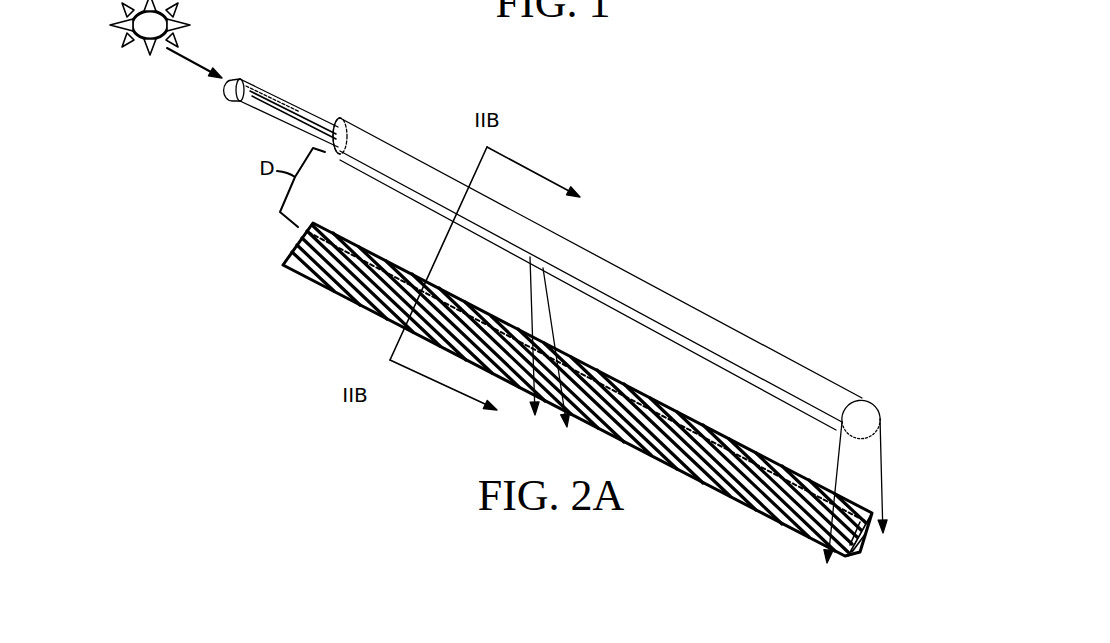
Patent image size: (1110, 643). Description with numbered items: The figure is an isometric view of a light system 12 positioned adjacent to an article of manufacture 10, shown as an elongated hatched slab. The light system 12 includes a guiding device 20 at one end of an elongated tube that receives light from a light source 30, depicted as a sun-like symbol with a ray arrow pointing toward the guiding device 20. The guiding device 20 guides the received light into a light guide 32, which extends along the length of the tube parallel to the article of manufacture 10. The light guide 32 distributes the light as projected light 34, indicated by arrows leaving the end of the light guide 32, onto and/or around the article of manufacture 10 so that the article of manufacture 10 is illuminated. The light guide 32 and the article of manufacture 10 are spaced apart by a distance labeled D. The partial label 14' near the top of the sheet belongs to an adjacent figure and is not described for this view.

In FIG. 2A, the article of manufacture 10 is at (292, 272).
In FIG. 2A, the light system 12 is at (563, 321).
In FIG. 2A, the guiding device 20 is at (253, 143).
In FIG. 2A, the light source 30 is at (129, 72).
In FIG. 2A, the light guide 32 is at (742, 333).
In FIG. 2A, the projected light 34 is at (882, 460).
In FIG. 1, the element 14' is at (840, 28).